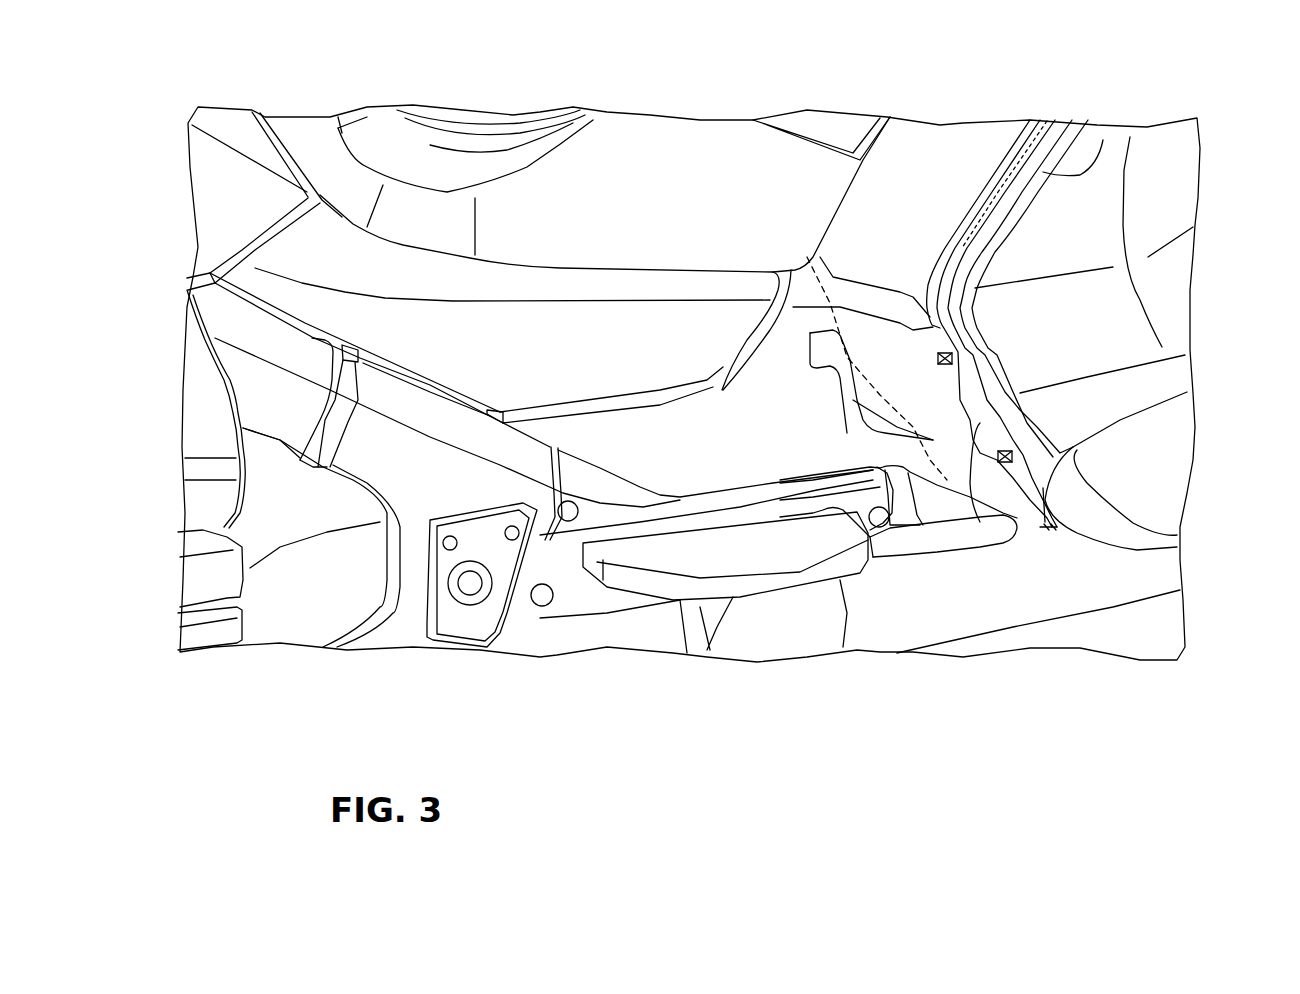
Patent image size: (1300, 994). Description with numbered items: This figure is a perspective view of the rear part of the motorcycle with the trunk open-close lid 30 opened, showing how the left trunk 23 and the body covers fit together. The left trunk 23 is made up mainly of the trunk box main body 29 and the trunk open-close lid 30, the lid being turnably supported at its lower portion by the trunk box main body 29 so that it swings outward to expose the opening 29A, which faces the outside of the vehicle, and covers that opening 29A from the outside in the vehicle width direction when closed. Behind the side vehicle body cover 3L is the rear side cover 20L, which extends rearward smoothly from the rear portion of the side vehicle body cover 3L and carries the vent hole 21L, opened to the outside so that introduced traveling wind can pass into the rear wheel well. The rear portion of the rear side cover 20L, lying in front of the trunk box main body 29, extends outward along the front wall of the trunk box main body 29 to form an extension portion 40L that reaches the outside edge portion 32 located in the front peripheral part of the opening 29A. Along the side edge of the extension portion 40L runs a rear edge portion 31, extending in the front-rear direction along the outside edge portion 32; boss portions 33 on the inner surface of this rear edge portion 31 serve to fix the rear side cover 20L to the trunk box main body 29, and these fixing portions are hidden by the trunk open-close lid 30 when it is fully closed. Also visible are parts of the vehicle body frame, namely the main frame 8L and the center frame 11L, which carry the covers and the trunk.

The side vehicle body cover 3L is at (597, 337).
The rear side cover 20L is at (707, 430).
The main frame 8L is at (280, 412).
The center frame 11L is at (405, 470).
The vent hole 21L is at (828, 400).
The extension portion 40L is at (947, 458).
The trunk box main body 29 is at (957, 163).
The left trunk 23 is at (1060, 278).
The opening 29A is at (1103, 140).
The boss portion 33 is at (952, 358).
The outside edge portion 32 is at (970, 373).
The rear edge portion 31 is at (980, 522).
The trunk open-close lid 30 is at (1130, 537).